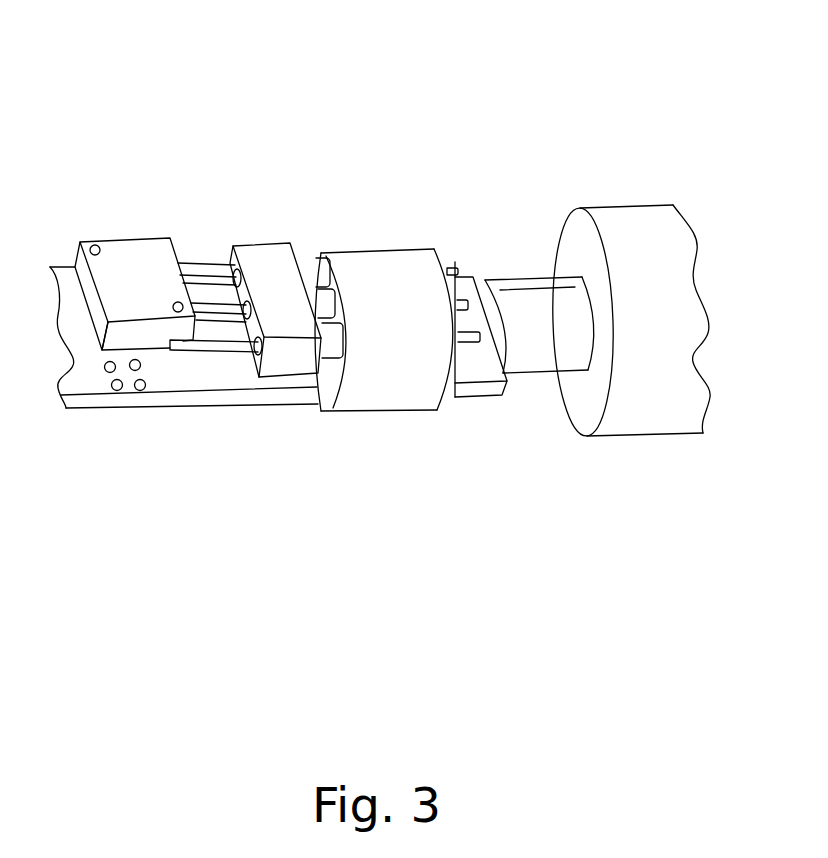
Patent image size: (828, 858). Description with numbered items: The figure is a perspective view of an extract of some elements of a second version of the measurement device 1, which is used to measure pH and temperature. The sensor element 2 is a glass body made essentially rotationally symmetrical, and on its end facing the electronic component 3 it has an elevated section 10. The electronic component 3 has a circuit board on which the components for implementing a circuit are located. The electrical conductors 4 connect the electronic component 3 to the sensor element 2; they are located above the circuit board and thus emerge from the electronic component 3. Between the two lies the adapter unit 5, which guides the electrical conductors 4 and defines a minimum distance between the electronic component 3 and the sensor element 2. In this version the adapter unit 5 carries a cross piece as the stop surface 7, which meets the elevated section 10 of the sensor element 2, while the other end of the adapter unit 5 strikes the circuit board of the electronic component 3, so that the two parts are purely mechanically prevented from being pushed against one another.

The measurement device 1 is at (193, 457).
The sensor element 2 is at (633, 220).
The electronic component 3 is at (210, 200).
The electrical conductors 4 is at (452, 270).
The adapter unit 5 is at (418, 393).
The stop surface 7 is at (477, 280).
The elevated section 10 is at (517, 300).